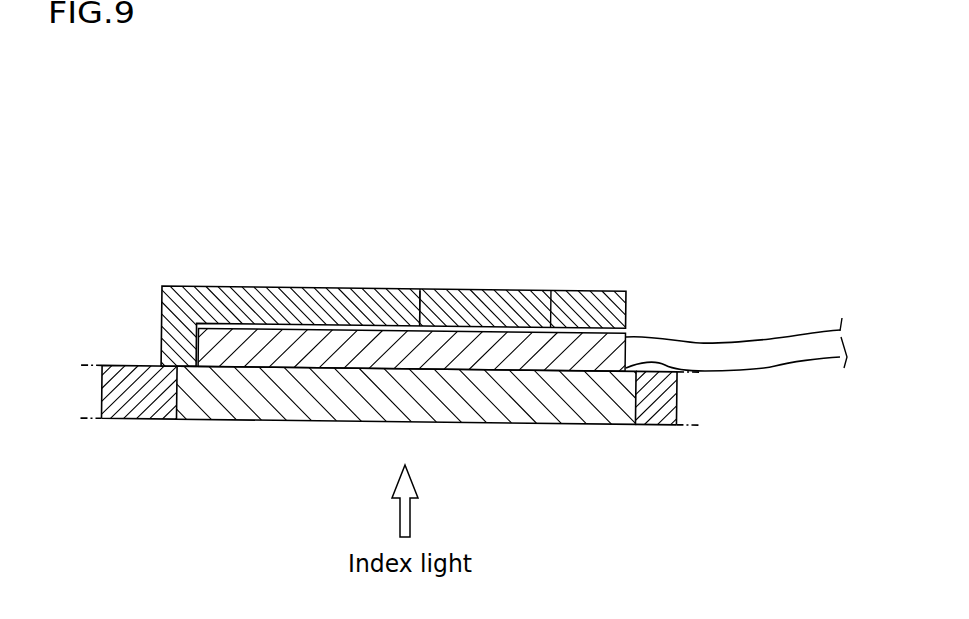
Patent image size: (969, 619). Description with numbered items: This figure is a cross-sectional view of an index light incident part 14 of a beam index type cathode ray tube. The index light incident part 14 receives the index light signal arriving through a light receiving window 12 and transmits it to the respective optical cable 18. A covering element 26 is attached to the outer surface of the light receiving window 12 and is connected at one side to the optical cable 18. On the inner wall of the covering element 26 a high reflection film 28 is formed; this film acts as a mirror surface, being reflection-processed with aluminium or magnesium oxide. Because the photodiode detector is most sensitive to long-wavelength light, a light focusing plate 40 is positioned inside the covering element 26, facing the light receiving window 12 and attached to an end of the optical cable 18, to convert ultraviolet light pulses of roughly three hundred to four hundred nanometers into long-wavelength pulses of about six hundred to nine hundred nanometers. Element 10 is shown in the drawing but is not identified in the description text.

The base plate 10 is at (132, 421).
The light receiving window 12 is at (302, 421).
The index light incident part 14 is at (247, 260).
The optical cable 18 is at (753, 348).
The covering element 26 is at (306, 297).
The high reflection film 28 is at (426, 296).
The light focusing plate 40 is at (553, 338).